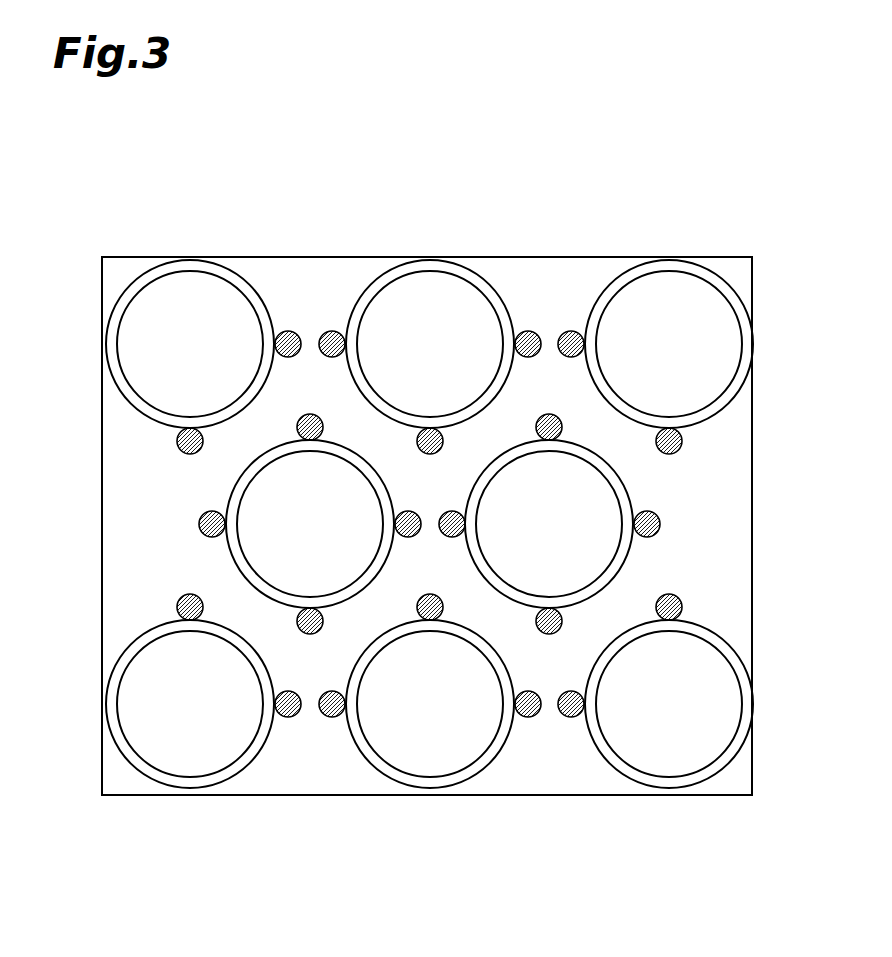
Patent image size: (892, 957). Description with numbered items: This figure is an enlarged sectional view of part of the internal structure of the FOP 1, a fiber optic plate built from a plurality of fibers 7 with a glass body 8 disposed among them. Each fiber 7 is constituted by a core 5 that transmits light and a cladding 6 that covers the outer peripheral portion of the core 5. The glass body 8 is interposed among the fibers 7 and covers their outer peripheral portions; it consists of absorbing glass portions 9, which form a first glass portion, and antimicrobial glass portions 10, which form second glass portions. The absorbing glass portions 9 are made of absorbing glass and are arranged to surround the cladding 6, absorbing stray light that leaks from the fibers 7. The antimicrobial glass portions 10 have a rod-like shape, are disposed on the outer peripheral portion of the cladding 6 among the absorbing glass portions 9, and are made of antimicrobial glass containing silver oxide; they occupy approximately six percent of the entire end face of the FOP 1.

The FOP 1 is at (693, 120).
The core 5 is at (667, 288).
The cladding 6 is at (610, 293).
The fiber 7 is at (667, 206).
The glass body 8 is at (427, 526).
The absorbing glass portion 9 is at (323, 277).
The antimicrobial glass portion 10 is at (528, 337).